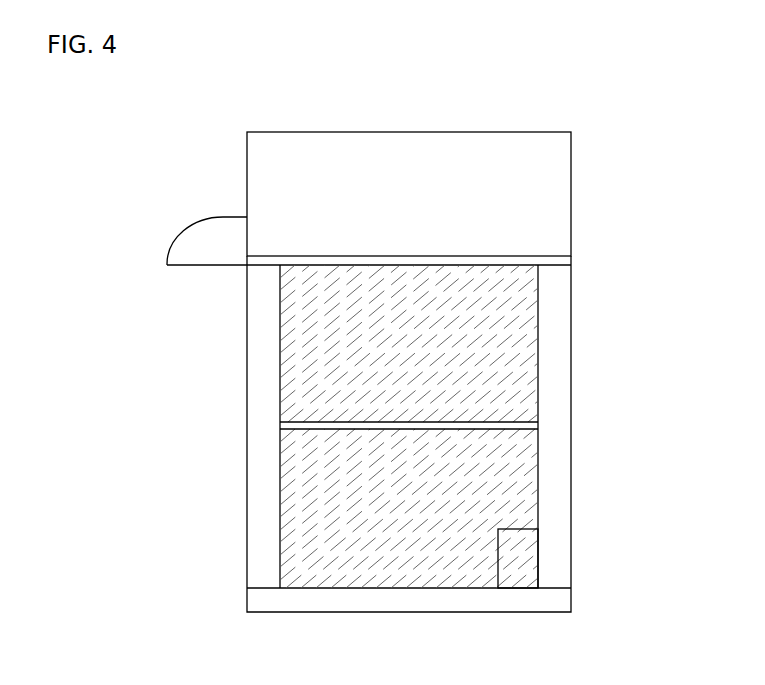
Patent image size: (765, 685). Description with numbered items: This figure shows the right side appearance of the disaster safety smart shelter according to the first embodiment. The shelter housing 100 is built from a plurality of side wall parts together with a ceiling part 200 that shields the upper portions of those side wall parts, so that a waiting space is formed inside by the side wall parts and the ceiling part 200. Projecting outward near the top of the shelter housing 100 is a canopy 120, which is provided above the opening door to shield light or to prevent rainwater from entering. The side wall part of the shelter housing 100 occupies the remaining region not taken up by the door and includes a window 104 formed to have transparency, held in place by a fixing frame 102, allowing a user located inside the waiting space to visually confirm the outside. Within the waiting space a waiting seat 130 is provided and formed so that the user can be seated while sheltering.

The ceiling part 200 is at (222, 147).
The shelter housing 100 is at (224, 486).
The canopy 120 is at (178, 237).
The fixing frame 102 is at (312, 422).
The window 104 is at (497, 389).
The waiting seat 130 is at (520, 528).